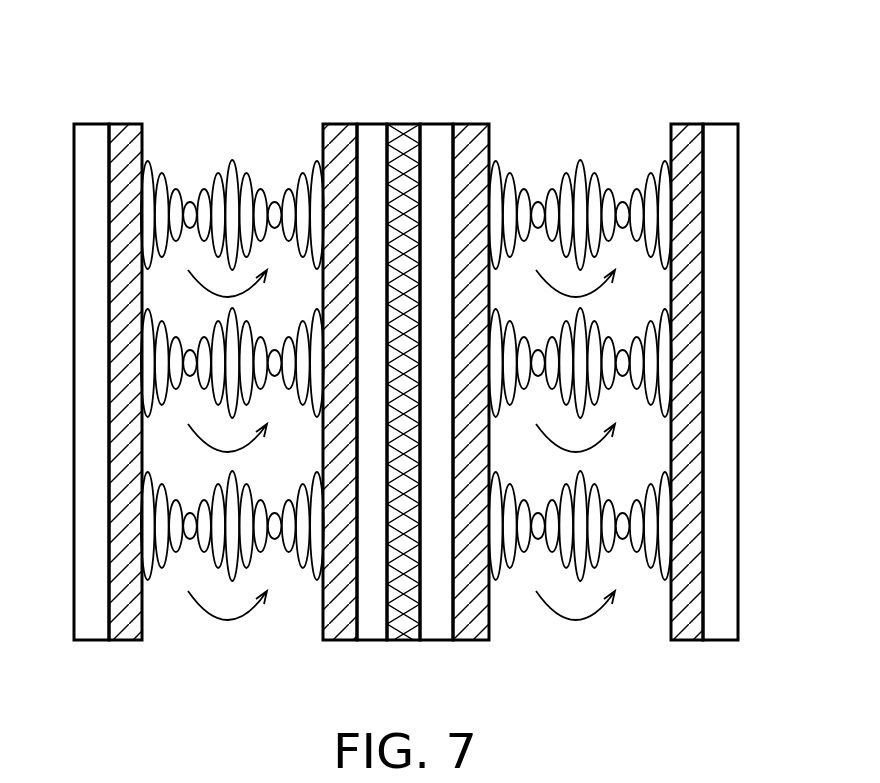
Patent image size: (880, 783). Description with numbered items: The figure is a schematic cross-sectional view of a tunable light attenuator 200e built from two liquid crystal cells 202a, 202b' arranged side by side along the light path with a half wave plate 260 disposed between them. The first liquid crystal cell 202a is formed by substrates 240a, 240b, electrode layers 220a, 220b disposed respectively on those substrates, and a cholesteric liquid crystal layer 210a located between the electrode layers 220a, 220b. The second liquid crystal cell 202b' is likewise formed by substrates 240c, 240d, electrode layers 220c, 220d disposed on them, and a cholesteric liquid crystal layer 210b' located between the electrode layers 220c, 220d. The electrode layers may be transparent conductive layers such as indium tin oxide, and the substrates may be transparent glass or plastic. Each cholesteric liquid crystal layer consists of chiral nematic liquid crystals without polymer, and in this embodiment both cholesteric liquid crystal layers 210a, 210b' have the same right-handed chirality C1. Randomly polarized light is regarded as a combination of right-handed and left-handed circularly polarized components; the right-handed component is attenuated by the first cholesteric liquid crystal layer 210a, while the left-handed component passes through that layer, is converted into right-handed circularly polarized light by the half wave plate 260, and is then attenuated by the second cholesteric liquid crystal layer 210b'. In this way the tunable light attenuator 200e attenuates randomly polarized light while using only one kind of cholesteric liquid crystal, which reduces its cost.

The tunable light attenuator 200e is at (435, 366).
The electrode layer 220a is at (123, 138).
The electrode layer 220b is at (348, 140).
The electrode layer 220c is at (466, 137).
The electrode layer 220d is at (693, 138).
The substrate 240a is at (92, 630).
The substrate 240b is at (375, 630).
The substrate 240c is at (435, 630).
The substrate 240d is at (722, 630).
The half wave plate 260 is at (398, 137).
The liquid crystal cell 202a is at (220, 320).
The liquid crystal cell 202b' is at (571, 320).
The cholesteric liquid crystal layer 210a is at (232, 159).
The cholesteric liquid crystal layer 210b' is at (589, 320).
The right-handed chirality C1 is at (228, 620).